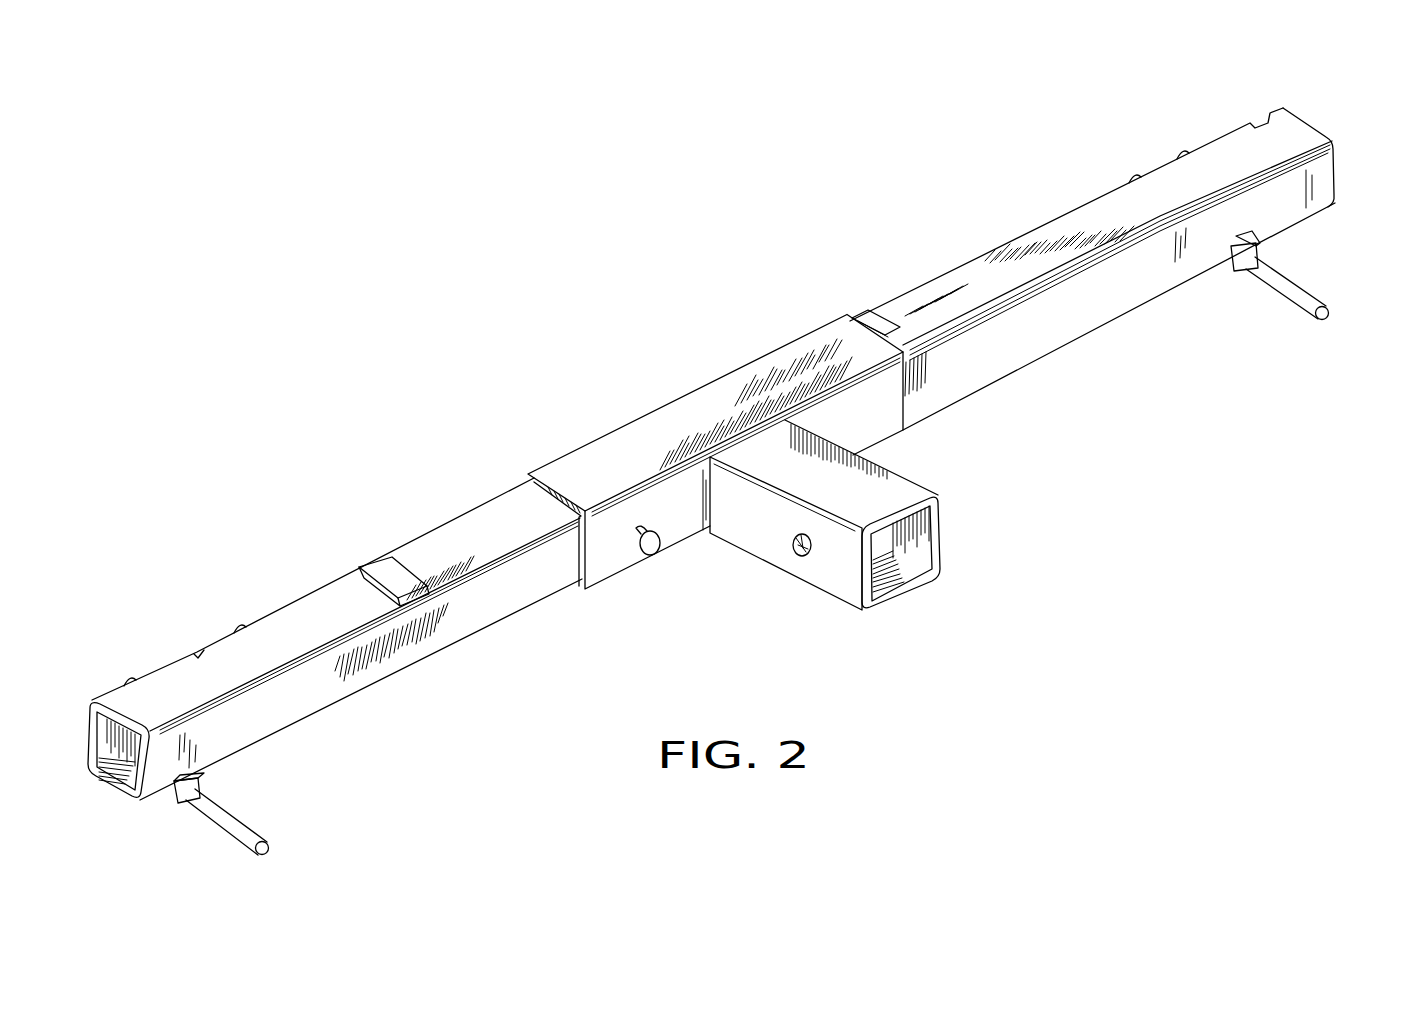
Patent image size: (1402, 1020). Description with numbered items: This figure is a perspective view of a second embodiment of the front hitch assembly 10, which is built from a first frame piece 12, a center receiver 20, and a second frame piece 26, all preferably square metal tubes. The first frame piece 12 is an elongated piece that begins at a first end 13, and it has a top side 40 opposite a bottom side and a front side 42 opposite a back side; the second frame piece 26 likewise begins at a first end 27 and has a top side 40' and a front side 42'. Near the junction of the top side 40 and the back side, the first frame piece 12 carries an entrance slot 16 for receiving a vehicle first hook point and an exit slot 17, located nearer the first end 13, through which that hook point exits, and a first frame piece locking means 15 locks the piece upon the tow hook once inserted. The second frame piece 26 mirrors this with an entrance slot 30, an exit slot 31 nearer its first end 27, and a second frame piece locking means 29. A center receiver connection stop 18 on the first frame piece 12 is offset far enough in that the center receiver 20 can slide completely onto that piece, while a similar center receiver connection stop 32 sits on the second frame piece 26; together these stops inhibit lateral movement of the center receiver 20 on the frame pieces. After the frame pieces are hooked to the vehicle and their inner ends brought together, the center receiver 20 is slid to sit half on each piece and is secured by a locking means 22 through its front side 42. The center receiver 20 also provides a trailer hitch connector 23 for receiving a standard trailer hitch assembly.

The front hitch assembly 10 is at (640, 382).
The first frame piece 12 is at (358, 683).
The first end 13 is at (112, 785).
The first frame piece locking means 15 is at (242, 826).
The entrance slot 16 is at (210, 628).
The exit slot 17 is at (110, 682).
The center receiver connection stop 18 is at (376, 564).
The center receiver 20 is at (612, 450).
The locking means 22 is at (658, 543).
The trailer hitch connector 23 is at (957, 541).
The second frame piece 26 is at (1053, 330).
The first end 27 is at (1327, 135).
The second frame piece locking means 29 is at (1298, 286).
The entrance slot 30 is at (1155, 157).
The exit slot 31 is at (1250, 106).
The center receiver connection stop 32 is at (866, 314).
The top side 40 is at (339, 619).
The front side 42 is at (354, 658).
The top side 40' is at (1067, 227).
The front side 42' is at (1139, 262).